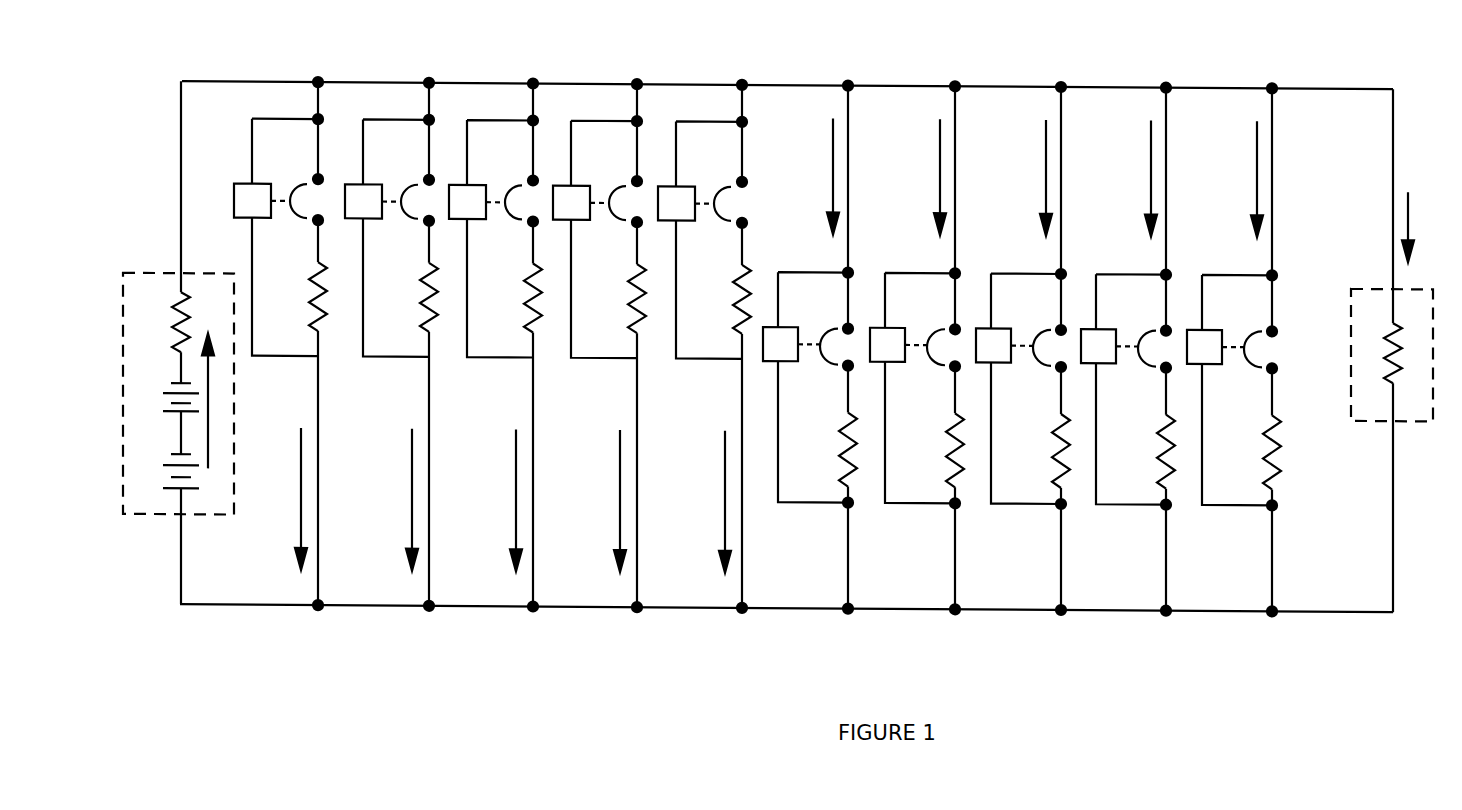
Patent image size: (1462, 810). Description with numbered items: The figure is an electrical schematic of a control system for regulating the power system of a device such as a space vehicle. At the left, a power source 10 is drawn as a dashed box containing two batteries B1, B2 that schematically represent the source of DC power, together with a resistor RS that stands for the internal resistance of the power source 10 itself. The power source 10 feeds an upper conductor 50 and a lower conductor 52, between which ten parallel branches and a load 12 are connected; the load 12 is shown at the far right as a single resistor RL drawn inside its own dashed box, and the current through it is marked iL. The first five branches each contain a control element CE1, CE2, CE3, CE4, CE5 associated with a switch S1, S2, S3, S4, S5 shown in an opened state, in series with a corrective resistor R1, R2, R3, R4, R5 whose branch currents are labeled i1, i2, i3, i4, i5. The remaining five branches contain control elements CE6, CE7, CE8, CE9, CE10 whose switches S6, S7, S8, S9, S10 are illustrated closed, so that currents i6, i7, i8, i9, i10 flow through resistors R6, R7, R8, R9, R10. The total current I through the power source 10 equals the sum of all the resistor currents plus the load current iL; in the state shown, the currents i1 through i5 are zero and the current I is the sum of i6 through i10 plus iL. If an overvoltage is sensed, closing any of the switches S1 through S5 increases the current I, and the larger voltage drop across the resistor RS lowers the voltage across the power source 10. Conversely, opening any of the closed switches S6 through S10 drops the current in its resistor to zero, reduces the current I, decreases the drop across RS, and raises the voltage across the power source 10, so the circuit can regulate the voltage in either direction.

The positive supply bus 50 is at (239, 80).
The return bus 52 is at (247, 603).
The power source 10 is at (137, 516).
The load 12 is at (1358, 413).
The resistor RS is at (176, 308).
The battery B1 is at (163, 397).
The battery B2 is at (163, 471).
The total current I is at (212, 370).
The resistor RL is at (1386, 325).
The load current iL is at (1419, 227).
The control element CE1 is at (237, 193).
The control element CE2 is at (373, 179).
The control element CE3 is at (477, 179).
The control element CE4 is at (581, 179).
The control element CE5 is at (686, 179).
The control element CE6 is at (812, 312).
The control element CE7 is at (919, 312).
The control element CE8 is at (1025, 312).
The control element CE9 is at (1130, 312).
The control element CE10 is at (1236, 312).
The switch S1 is at (295, 213).
The switch S2 is at (408, 208).
The switch S3 is at (512, 208).
The switch S4 is at (616, 208).
The switch S5 is at (721, 208).
The switch S6 is at (834, 350).
The switch S7 is at (941, 350).
The switch S8 is at (1047, 350).
The switch S9 is at (1152, 350).
The switch S10 is at (1258, 350).
The resistor R1 is at (312, 301).
The resistor R2 is at (424, 293).
The resistor R3 is at (528, 293).
The resistor R4 is at (632, 293).
The resistor R5 is at (737, 293).
The resistor R6 is at (843, 440).
The resistor R7 is at (950, 440).
The resistor R8 is at (1056, 440).
The resistor R9 is at (1161, 440).
The resistor R10 is at (1267, 440).
The current i1 is at (286, 499).
The current i2 is at (397, 499).
The current i3 is at (501, 500).
The current i4 is at (605, 501).
The current i5 is at (710, 502).
The current i6 is at (817, 176).
The current i7 is at (924, 177).
The current i8 is at (1030, 178).
The current i9 is at (1135, 178).
The current i10 is at (1241, 179).